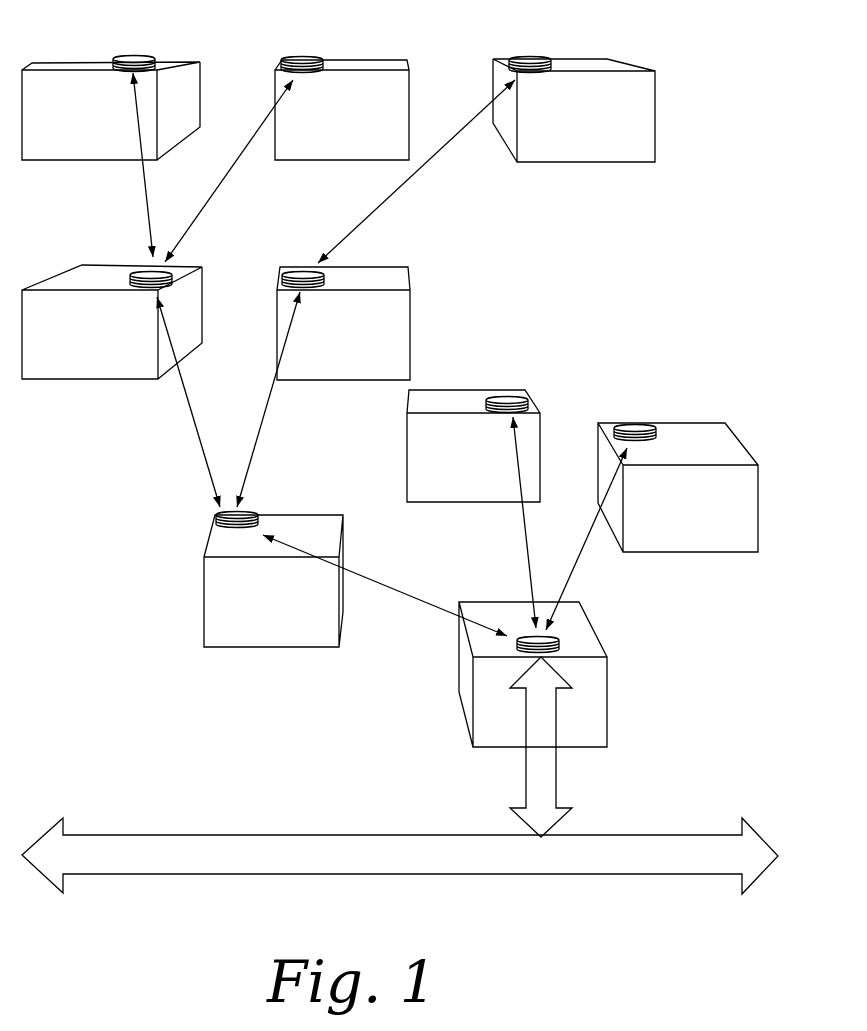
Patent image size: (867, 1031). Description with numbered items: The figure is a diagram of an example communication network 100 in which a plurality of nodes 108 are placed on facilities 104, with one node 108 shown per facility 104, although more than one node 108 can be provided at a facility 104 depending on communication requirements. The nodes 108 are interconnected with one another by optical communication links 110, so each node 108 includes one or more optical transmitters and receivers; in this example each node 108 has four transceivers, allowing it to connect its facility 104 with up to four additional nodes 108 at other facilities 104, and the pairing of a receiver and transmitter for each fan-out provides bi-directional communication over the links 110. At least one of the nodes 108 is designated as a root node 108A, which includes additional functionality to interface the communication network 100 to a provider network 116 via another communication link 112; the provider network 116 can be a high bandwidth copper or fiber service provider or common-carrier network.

The communication network 100 is at (692, 252).
The facility 104 is at (390, 403).
The node 108 is at (136, 60).
The root node 108A is at (548, 640).
The communication link 110 is at (148, 222).
The communication link 112 is at (545, 778).
The provider network 116 is at (400, 856).